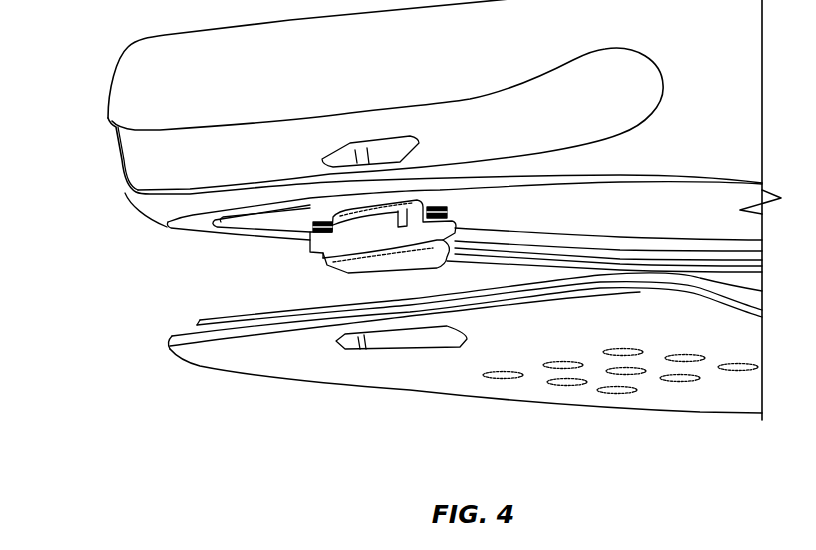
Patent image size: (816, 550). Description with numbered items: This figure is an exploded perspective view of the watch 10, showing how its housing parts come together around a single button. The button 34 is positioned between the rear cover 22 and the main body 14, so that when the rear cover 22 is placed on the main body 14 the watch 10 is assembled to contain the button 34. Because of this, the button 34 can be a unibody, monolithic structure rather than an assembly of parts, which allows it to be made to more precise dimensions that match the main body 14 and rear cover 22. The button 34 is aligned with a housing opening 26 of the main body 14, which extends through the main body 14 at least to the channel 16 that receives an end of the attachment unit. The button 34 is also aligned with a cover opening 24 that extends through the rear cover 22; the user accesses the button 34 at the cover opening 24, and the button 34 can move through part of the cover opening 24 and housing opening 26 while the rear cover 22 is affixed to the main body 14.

The watch 10 is at (197, 395).
The main body 14 is at (143, 217).
The channel 16 is at (133, 153).
The rear cover 22 is at (447, 377).
The cover opening 24 is at (368, 353).
The housing opening 26 is at (366, 152).
The button 34 is at (327, 265).